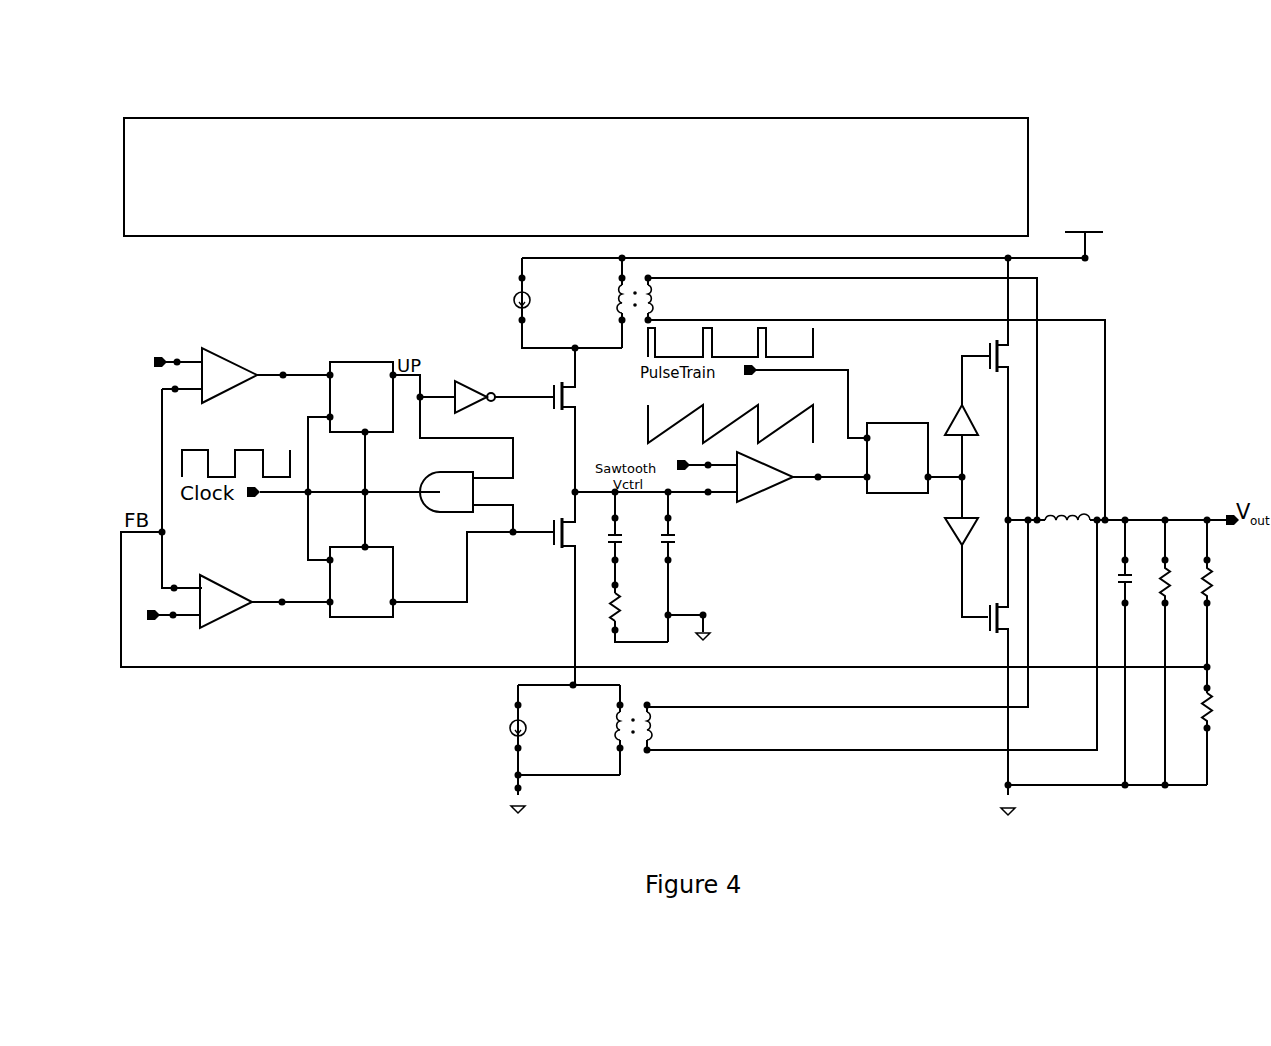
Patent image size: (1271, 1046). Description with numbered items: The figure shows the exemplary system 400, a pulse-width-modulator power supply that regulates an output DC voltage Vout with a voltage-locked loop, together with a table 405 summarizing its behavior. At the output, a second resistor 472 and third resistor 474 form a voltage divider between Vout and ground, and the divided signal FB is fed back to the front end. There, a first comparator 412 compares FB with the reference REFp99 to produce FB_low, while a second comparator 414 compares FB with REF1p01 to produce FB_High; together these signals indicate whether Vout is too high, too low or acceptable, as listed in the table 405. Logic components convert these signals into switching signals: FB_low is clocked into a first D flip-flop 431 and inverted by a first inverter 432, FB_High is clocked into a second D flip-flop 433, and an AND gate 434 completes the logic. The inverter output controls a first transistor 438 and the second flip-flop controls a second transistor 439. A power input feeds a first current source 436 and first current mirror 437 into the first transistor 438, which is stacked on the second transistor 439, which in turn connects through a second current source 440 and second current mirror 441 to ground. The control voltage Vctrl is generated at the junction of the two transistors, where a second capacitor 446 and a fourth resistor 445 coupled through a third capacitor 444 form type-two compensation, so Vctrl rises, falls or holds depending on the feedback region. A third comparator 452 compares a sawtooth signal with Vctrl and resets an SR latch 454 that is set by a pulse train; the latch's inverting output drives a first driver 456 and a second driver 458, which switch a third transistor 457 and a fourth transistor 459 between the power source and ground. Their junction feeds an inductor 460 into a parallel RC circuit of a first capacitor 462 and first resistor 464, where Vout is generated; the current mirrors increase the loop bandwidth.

The exemplary system 400 is at (158, 72).
The table 405 is at (433, 116).
The first comparator 412 is at (228, 395).
The second comparator 414 is at (228, 620).
The first D flip-flop 431 is at (331, 432).
The first inverter 432 is at (468, 413).
The second D flip-flop 433 is at (330, 617).
The AND gate 434 is at (448, 516).
The first current source 436 is at (514, 306).
The first current mirror 437 is at (652, 300).
The first transistor 438 is at (598, 372).
The second transistor 439 is at (598, 514).
The second current source 440 is at (512, 735).
The second current mirror 441 is at (654, 727).
The third capacitor 444 is at (610, 553).
The fourth resistor 445 is at (610, 620).
The second capacitor 446 is at (675, 553).
The third comparator 452 is at (765, 493).
The SR latch 454 is at (887, 493).
The first driver 456 is at (950, 418).
The third transistor 457 is at (1000, 372).
The second driver 458 is at (950, 540).
The fourth transistor 459 is at (1000, 636).
The inductor 460 is at (1062, 518).
The first capacitor 462 is at (1128, 598).
The first resistor 464 is at (1170, 592).
The second resistor 472 is at (1212, 595).
The third resistor 474 is at (1212, 725).